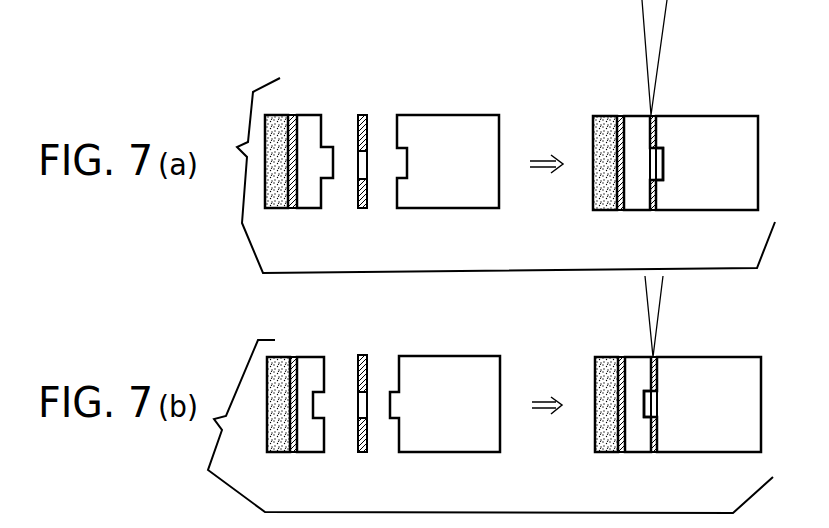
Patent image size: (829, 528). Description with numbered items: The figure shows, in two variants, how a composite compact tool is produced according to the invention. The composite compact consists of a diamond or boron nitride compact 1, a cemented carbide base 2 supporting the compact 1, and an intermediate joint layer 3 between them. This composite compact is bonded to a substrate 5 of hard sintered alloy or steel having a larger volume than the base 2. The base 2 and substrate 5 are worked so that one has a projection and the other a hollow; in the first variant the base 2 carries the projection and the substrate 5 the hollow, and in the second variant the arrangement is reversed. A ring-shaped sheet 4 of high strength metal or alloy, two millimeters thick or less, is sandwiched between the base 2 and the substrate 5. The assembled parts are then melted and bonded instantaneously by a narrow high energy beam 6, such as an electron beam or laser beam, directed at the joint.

In FIG. 7A, the diamond or boron nitride compact 1 is at (278, 212).
In FIG. 7B, the diamond or boron nitride compact 1 is at (278, 454).
In FIG. 7A, the base 2 is at (312, 204).
In FIG. 7B, the base 2 is at (314, 447).
In FIG. 7A, the intermediate joint layer 3 is at (292, 212).
In FIG. 7B, the intermediate joint layer 3 is at (289, 454).
In FIG. 7A, the sheet 4 is at (362, 212).
In FIG. 7B, the sheet 4 is at (363, 454).
In FIG. 7A, the substrate 5 is at (447, 203).
In FIG. 7B, the substrate 5 is at (448, 444).
In FIG. 7A, the high energy beam 6 is at (660, 28).
In FIG. 7B, the high energy beam 6 is at (658, 303).